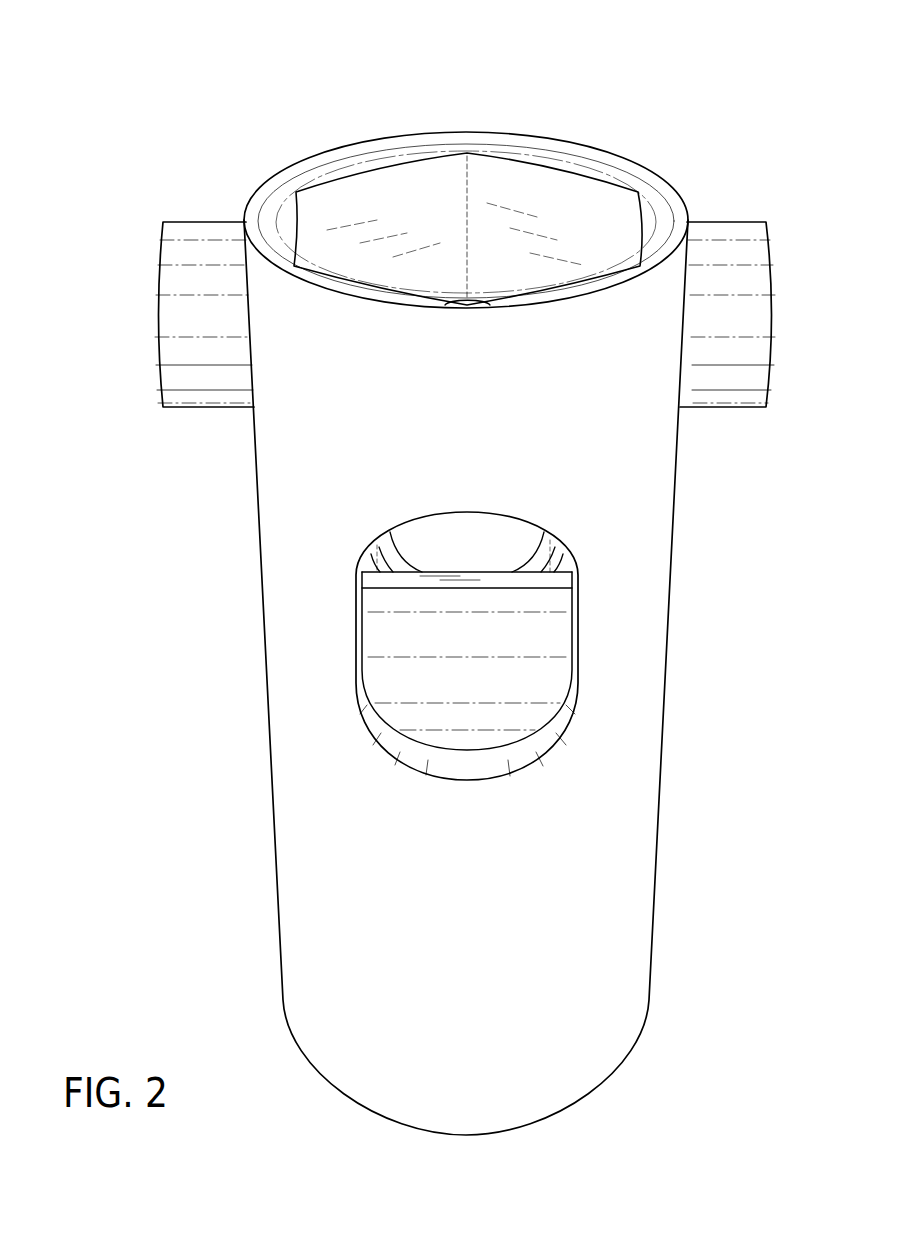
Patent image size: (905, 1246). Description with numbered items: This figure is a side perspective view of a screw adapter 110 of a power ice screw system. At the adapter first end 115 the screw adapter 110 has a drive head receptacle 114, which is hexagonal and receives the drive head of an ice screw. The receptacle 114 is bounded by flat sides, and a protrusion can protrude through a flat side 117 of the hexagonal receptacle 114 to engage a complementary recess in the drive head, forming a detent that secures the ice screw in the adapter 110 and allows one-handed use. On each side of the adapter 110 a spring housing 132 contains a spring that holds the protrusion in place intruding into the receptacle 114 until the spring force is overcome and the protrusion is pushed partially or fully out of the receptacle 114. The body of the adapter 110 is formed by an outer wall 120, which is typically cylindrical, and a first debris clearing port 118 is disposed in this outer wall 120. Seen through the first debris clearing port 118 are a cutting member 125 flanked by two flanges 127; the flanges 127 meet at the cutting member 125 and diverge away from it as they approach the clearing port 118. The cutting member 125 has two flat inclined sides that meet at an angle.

The screw adapter 110 is at (160, 78).
The drive head receptacle 114 is at (497, 167).
The adapter first end 115 is at (642, 162).
The flat side 117 is at (313, 210).
The first debris clearing port 118 is at (362, 636).
The outer wall 120 is at (483, 428).
The cutting member 125 is at (477, 572).
The flanges 127 is at (483, 648).
The spring housing 132 is at (166, 222).